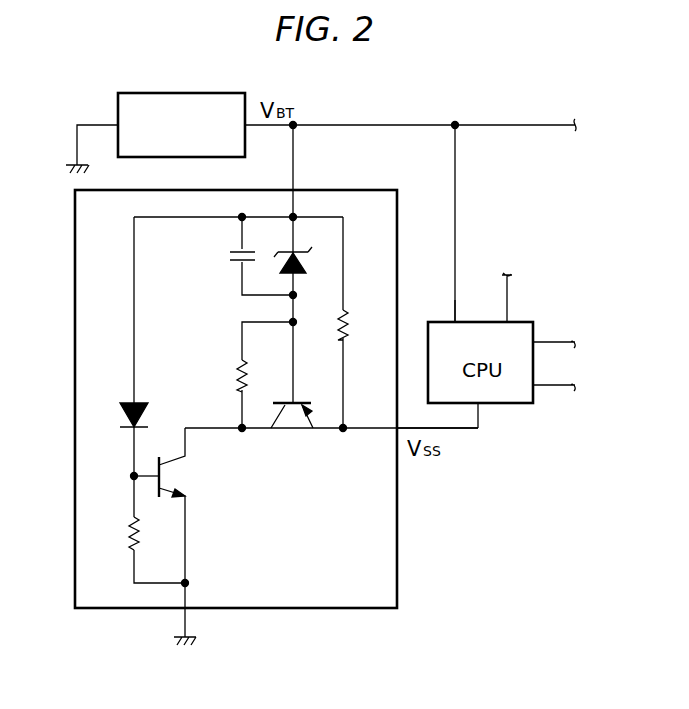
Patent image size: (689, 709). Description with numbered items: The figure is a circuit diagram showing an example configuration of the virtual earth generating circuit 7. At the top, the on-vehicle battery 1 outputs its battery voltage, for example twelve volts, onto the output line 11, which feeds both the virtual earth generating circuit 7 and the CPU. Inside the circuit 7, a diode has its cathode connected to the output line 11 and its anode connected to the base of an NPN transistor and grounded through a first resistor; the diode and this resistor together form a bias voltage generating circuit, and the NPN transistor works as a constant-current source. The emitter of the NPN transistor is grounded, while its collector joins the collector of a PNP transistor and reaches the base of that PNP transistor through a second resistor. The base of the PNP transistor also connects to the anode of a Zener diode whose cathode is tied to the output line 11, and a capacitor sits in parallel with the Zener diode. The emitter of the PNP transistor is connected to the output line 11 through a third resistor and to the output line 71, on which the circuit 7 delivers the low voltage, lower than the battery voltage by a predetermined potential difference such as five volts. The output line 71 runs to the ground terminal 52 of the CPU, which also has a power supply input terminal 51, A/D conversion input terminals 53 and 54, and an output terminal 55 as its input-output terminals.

The on-vehicle battery 1 is at (183, 93).
The output line 11 is at (355, 125).
The virtual earth generating circuit 7 is at (397, 535).
The power supply input terminal 51 is at (455, 321).
The ground terminal 52 is at (481, 405).
The A/D conversion input terminal 53 is at (537, 342).
The A/D conversion input terminal 54 is at (537, 386).
The output terminal 55 is at (506, 321).
The output line 71 is at (459, 430).